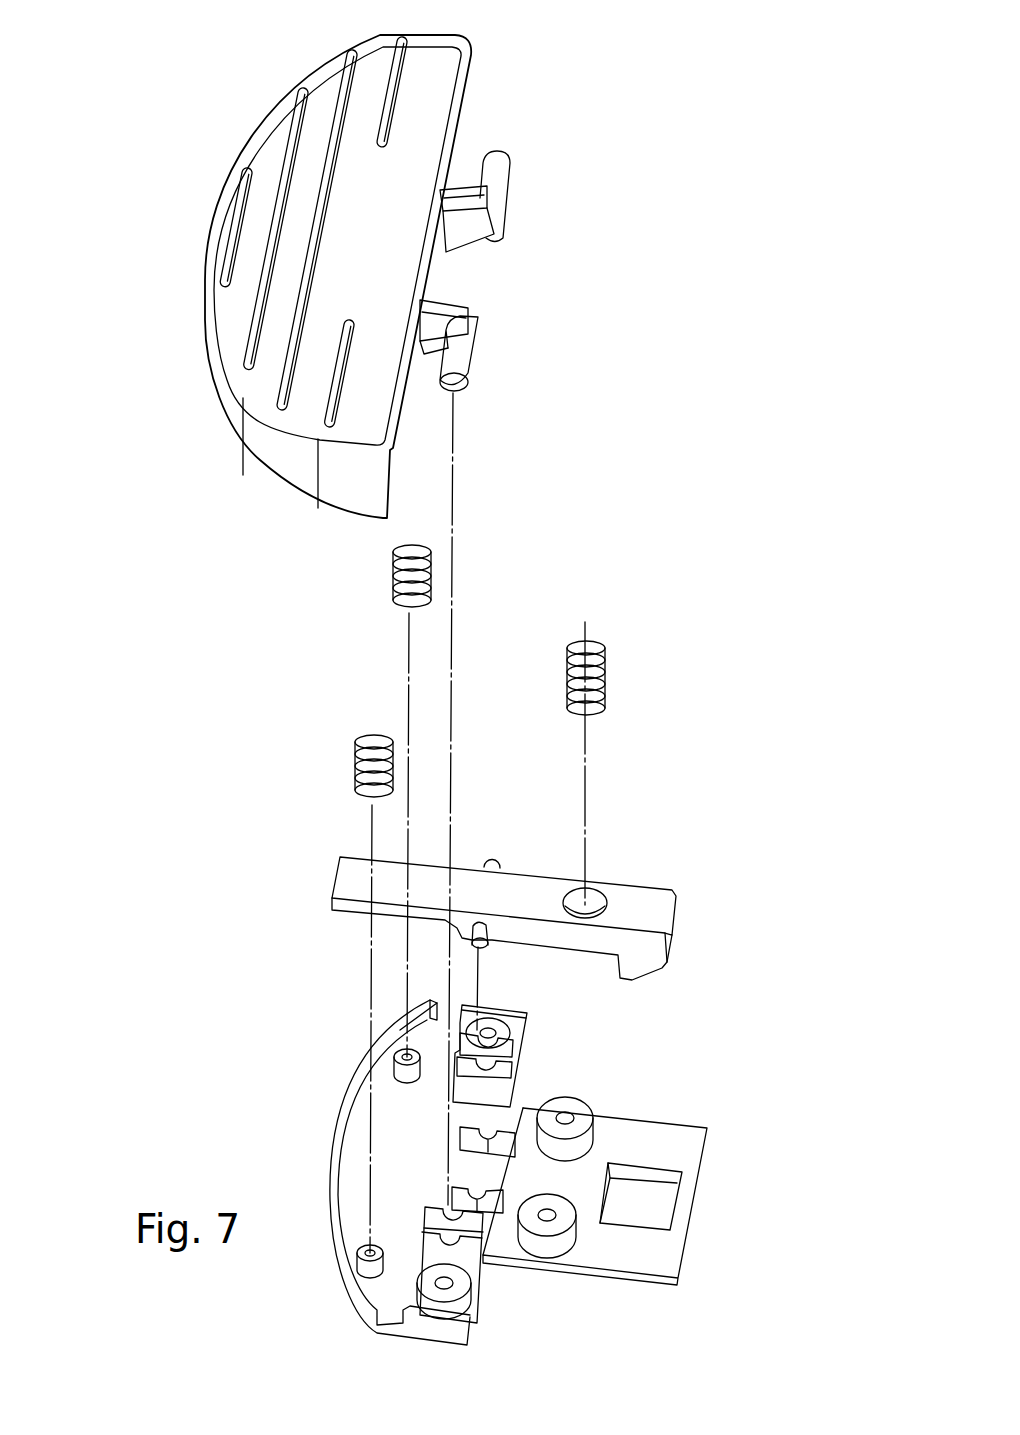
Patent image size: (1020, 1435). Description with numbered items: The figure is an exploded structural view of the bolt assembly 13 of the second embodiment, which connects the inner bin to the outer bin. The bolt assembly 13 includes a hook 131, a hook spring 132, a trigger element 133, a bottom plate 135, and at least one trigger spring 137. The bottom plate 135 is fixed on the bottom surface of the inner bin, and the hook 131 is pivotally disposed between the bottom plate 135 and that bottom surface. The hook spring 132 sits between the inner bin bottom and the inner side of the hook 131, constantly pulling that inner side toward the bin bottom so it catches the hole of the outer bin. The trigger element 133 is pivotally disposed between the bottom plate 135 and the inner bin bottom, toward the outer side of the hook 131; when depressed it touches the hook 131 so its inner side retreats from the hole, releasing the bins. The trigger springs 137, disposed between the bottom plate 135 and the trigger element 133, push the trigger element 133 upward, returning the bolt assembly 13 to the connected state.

The bolt assembly 13 is at (716, 409).
The trigger element 133 is at (297, 388).
The trigger spring 137 is at (388, 566).
The hook spring 132 is at (603, 657).
The hook 131 is at (660, 898).
The bottom plate 135 is at (670, 1133).